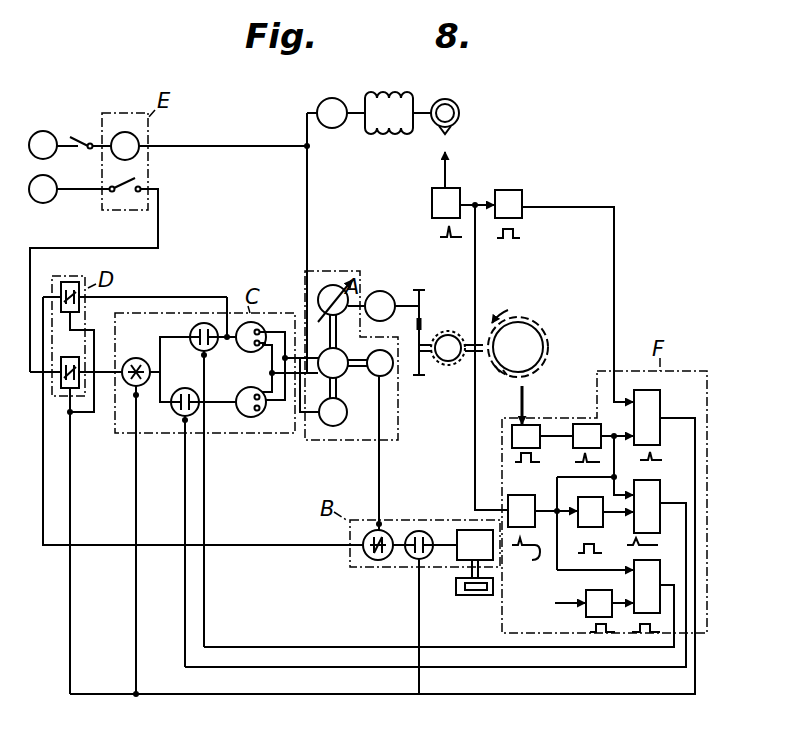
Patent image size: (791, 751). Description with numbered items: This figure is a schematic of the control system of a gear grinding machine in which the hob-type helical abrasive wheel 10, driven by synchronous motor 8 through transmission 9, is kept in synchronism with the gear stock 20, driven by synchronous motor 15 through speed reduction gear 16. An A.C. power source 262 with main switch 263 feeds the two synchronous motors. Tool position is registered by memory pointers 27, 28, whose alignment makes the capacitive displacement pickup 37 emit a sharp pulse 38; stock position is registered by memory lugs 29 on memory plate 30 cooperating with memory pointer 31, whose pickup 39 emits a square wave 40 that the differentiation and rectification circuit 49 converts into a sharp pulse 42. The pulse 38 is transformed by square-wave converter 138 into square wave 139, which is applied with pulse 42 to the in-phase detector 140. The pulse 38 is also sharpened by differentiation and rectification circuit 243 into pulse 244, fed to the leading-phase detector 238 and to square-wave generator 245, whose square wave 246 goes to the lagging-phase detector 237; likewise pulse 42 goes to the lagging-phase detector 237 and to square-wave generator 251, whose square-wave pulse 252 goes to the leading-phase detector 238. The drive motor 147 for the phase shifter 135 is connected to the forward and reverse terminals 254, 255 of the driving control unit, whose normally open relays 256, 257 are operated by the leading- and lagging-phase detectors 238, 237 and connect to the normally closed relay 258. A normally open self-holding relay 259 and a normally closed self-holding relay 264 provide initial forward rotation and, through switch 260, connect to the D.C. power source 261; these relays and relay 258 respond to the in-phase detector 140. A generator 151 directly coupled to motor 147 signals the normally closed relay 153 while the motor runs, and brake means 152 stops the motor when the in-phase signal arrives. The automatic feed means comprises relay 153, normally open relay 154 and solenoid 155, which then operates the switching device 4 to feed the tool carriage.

The switching device 4 is at (469, 595).
The synchronous motor 8 is at (332, 128).
The transmission 9 is at (354, 117).
The hob-type helical abrasive wheel 10 is at (390, 128).
The synchronous motor 15 is at (383, 291).
The speed reduction gear 16 is at (421, 322).
The gear stock 20 is at (452, 366).
The memory pointer 27 is at (450, 131).
The memory pointer 28 is at (450, 154).
The memory lugs 29 is at (505, 374).
The memory plate 30 is at (530, 329).
The memory pointer 31 is at (527, 402).
The frequency-modulation capacitive displacement pickup 37 is at (432, 205).
The sharp pulse 38 is at (440, 236).
The frequency-modulation capacitive displacement pickup 39 is at (512, 437).
The square wave 40 is at (515, 460).
The sharp rising pulse 42 is at (578, 460).
The differentiation and rectification circuit 49 is at (581, 424).
The phase shifter 135 is at (331, 284).
The square-wave converter 138 is at (516, 183).
The square wave 139 is at (520, 236).
The in-phase detector 140 is at (660, 403).
The drive motor 147 is at (348, 357).
The generator 151 is at (388, 372).
The brake means 152 is at (333, 426).
The normally closed relay 153 is at (371, 558).
The normally open relay 154 is at (413, 558).
The solenoid 155 is at (463, 530).
The lagging-phase detector 237 is at (660, 496).
The leading-phase detector 238 is at (660, 569).
The differentiation and rectification circuit 243 is at (508, 501).
The sharper pulse 244 is at (528, 548).
The square-wave generator 245 is at (580, 497).
The square wave 246 is at (710, 544).
The square-wave generator 251 is at (586, 595).
The square-wave pulse 252 is at (590, 629).
The forward terminal 254 is at (269, 367).
The reverse terminal 255 is at (251, 417).
The normally open relay 256 is at (200, 323).
The normally open relay 257 is at (198, 502).
The normally closed relay 258 is at (134, 515).
The normally open self-holding relay 259 is at (75, 390).
The switch 260 is at (140, 181).
The D.C. power source 261 is at (45, 203).
The A.C. power source 262 is at (50, 120).
The main switch 263 is at (78, 134).
The normally closed self-holding relay 264 is at (70, 282).